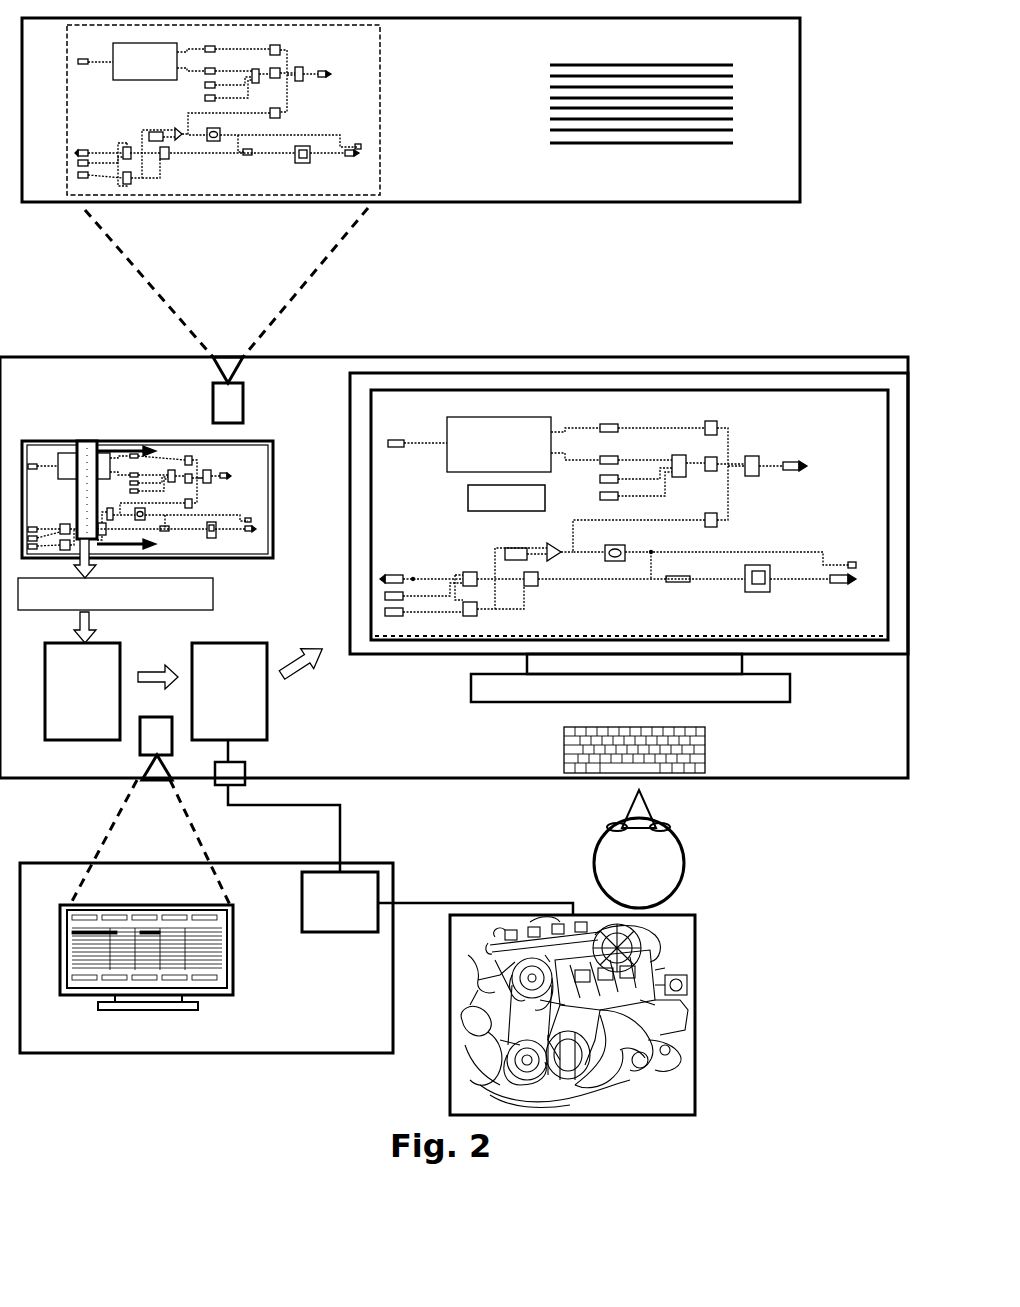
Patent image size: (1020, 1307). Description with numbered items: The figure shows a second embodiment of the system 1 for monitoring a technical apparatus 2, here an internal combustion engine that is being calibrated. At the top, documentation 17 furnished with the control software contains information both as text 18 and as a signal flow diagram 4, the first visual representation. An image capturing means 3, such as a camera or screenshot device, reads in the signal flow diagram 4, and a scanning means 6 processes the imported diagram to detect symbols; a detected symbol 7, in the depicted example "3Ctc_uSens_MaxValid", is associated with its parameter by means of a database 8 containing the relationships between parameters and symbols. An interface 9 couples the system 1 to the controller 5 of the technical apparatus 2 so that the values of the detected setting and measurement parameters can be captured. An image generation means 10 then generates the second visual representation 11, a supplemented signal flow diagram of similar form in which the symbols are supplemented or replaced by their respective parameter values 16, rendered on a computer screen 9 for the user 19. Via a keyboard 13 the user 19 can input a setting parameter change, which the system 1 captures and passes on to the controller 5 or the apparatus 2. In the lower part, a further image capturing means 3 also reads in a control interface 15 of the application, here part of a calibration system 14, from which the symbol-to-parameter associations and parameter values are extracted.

The system 1 is at (400, 780).
The technical apparatus 2 is at (695, 1028).
The image capturing means 3 is at (219, 556).
The signal flow diagram 4 is at (92, 166).
The controller 5 is at (437, 902).
The scanning means 6 is at (88, 440).
The symbol 7 is at (216, 595).
The database 8 is at (111, 691).
The interface 9 is at (232, 778).
The image generation means 10 is at (260, 689).
The second visual representation 11 is at (680, 446).
The keyboard 13 is at (697, 770).
The calibration system 14 is at (206, 958).
The control interface 15 is at (160, 980).
The parameter value 16 is at (479, 511).
The documentation 17 is at (538, 175).
The text 18 is at (690, 120).
The user 19 is at (639, 849).